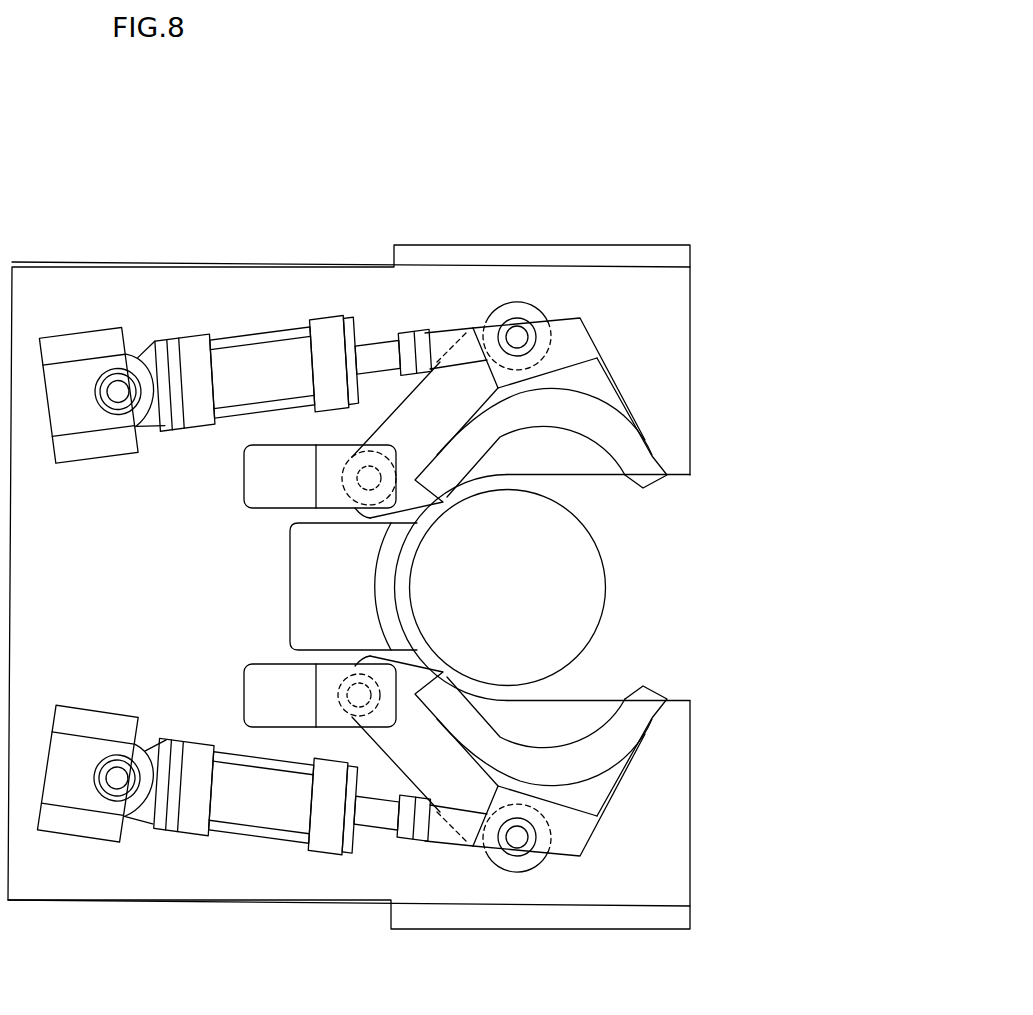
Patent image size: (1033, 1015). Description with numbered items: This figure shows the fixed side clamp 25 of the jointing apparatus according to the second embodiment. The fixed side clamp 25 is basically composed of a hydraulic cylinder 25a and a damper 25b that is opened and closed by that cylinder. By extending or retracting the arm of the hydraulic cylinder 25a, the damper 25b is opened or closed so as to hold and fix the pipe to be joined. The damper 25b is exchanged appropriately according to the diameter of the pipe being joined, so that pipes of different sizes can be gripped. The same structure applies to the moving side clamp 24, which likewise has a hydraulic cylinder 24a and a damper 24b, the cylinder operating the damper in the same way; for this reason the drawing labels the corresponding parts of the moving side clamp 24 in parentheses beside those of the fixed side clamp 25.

The fixed side clamp 25 is at (324, 251).
The moving side clamp 24 is at (349, 551).
The hydraulic cylinder 25a is at (236, 338).
The hydraulic cylinder 24a is at (235, 577).
The damper 25b is at (647, 457).
The damper 24b is at (605, 587).